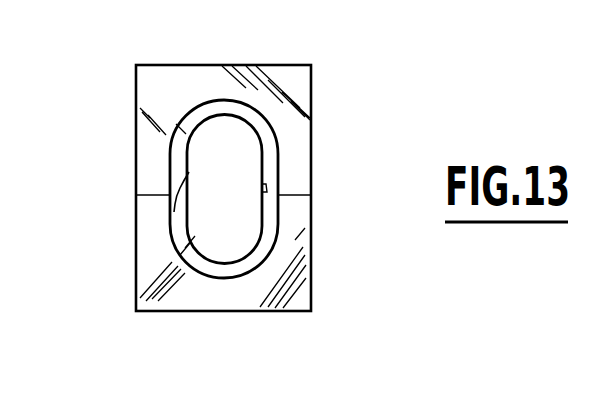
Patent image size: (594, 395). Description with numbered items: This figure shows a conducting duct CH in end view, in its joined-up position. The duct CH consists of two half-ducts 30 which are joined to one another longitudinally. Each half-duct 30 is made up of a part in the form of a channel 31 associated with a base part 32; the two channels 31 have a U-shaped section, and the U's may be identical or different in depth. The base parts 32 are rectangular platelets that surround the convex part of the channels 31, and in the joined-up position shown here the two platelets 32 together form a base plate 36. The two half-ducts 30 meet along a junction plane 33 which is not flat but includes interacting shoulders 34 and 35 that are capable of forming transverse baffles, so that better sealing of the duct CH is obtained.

The half-duct 30 is at (318, 110).
The channel 31 is at (212, 107).
The base part 32 is at (160, 82).
The junction plane 33 is at (155, 195).
The shoulder 34 is at (172, 208).
The shoulder 35 is at (190, 174).
The base plate 36 is at (147, 113).
The conducting duct CH is at (358, 193).